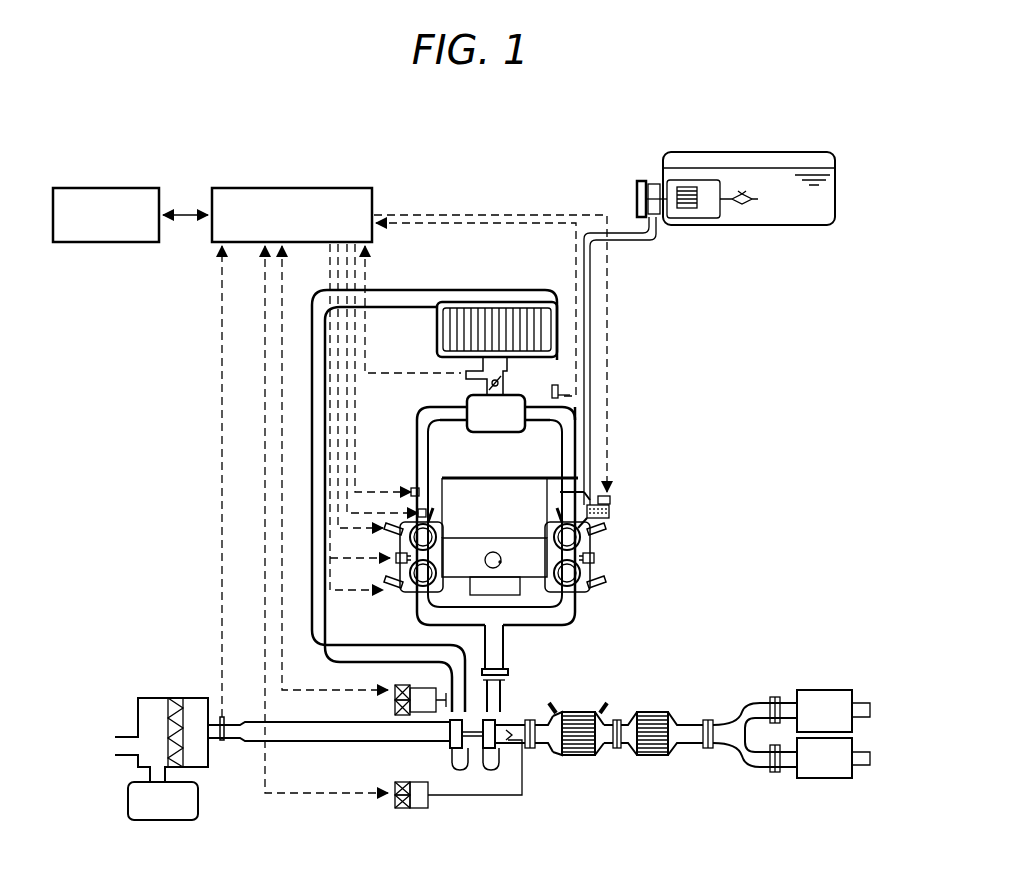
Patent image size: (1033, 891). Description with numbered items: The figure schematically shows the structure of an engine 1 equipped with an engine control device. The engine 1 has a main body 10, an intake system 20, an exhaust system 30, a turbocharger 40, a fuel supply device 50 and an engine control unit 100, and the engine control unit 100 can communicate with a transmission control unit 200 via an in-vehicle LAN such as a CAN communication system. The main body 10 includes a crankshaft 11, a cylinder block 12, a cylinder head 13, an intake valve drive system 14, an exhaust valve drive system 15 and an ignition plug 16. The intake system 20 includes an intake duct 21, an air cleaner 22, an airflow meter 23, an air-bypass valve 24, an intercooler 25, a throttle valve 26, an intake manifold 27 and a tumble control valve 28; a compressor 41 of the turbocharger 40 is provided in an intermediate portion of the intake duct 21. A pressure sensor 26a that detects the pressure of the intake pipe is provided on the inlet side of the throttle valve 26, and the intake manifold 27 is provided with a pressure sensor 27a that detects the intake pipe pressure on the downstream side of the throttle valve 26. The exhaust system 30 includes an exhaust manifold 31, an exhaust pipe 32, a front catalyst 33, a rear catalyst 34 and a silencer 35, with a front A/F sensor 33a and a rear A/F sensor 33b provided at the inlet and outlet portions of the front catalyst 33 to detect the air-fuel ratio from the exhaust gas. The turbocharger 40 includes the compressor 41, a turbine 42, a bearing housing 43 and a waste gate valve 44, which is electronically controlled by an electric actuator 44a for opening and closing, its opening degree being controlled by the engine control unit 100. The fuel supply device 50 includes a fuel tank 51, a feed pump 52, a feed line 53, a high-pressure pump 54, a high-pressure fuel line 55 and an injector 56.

The engine 1 is at (138, 155).
The engine control unit 100 is at (303, 188).
The transmission control unit 200 is at (103, 243).
The fuel supply device 50 is at (555, 190).
The fuel tank 51 is at (770, 152).
The feed pump 52 is at (642, 185).
The feed line 53 is at (587, 300).
The high-pressure pump 54 is at (608, 511).
The high-pressure fuel line 55 is at (446, 477).
The injector 56 is at (424, 516).
The intake system 20 is at (288, 485).
The intake duct 21 is at (310, 555).
The air cleaner 22 is at (138, 708).
The airflow meter 23 is at (223, 740).
The air-bypass valve 24 is at (404, 712).
The intercooler 25 is at (557, 330).
The throttle valve 26 is at (504, 383).
The pressure sensor 26a is at (463, 373).
The intake manifold 27 is at (575, 440).
The pressure sensor 27a is at (558, 403).
The tumble control valve 28 is at (570, 492).
The main body 10 is at (615, 570).
The crankshaft 11 is at (498, 577).
The cylinder block 12 is at (500, 562).
The cylinder head 13 is at (588, 571).
The intake valve drive system 14 is at (578, 539).
The exhaust valve drive system 15 is at (600, 593).
The ignition plug 16 is at (592, 557).
The exhaust manifold 31 is at (417, 605).
The exhaust system 30 is at (710, 760).
The exhaust pipe 32 is at (693, 740).
The front catalyst 33 is at (582, 755).
The front A/F sensor 33a is at (553, 709).
The rear A/F sensor 33b is at (604, 710).
The rear catalyst 34 is at (653, 755).
The silencer 35 is at (823, 779).
The turbocharger 40 is at (477, 773).
The compressor 41 is at (455, 737).
The turbine 42 is at (490, 742).
The bearing housing 43 is at (480, 755).
The waste gate valve 44 is at (506, 735).
The electric actuator 44a is at (395, 806).